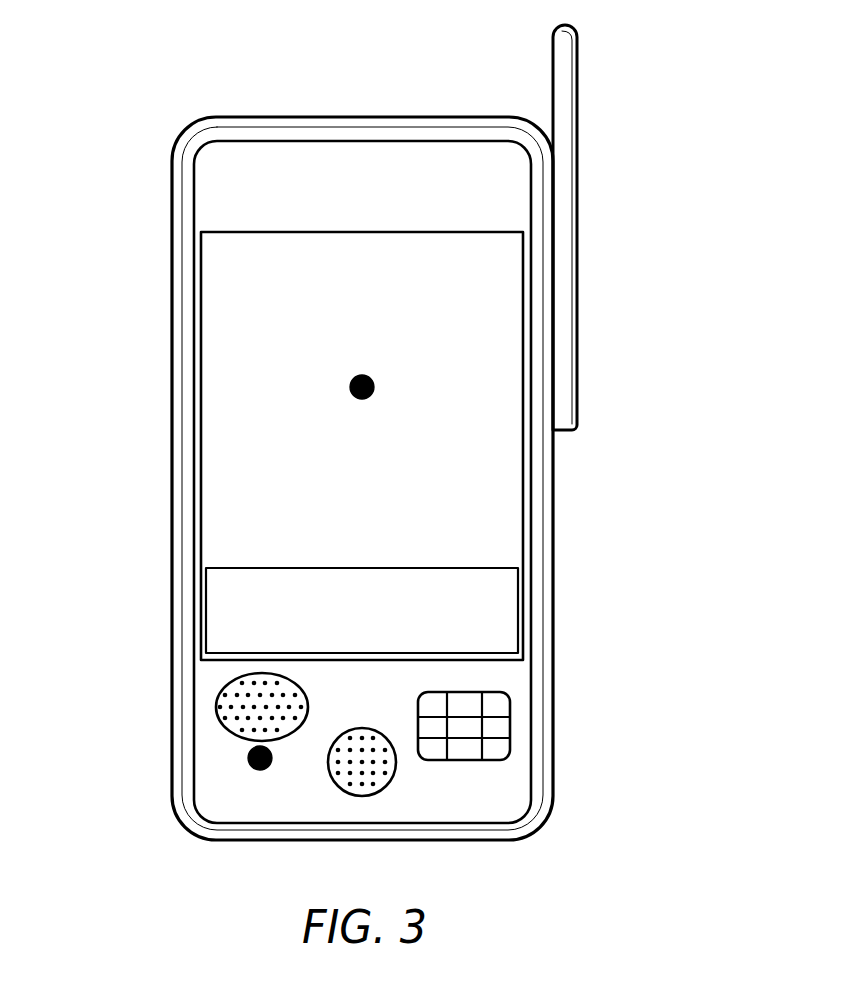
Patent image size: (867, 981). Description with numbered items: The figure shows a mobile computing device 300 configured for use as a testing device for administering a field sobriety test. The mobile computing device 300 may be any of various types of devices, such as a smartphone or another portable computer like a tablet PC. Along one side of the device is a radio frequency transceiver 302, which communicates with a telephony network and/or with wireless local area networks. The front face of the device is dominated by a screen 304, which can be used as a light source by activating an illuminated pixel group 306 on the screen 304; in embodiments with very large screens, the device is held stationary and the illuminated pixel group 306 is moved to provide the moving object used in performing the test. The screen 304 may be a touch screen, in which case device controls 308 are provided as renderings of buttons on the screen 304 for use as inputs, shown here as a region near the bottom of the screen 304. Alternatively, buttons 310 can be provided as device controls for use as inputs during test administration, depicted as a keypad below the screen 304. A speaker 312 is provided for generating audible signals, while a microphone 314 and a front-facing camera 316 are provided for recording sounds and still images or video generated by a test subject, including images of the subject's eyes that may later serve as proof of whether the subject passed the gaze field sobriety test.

The mobile computing device 300 is at (553, 515).
The radio frequency transceiver 302 is at (565, 333).
The screen 304 is at (227, 497).
The illuminated pixel group 306 is at (350, 384).
The device controls 308 is at (227, 618).
The buttons 310 is at (493, 727).
The speaker 312 is at (213, 707).
The microphone 314 is at (327, 767).
The front-facing camera 316 is at (248, 757).